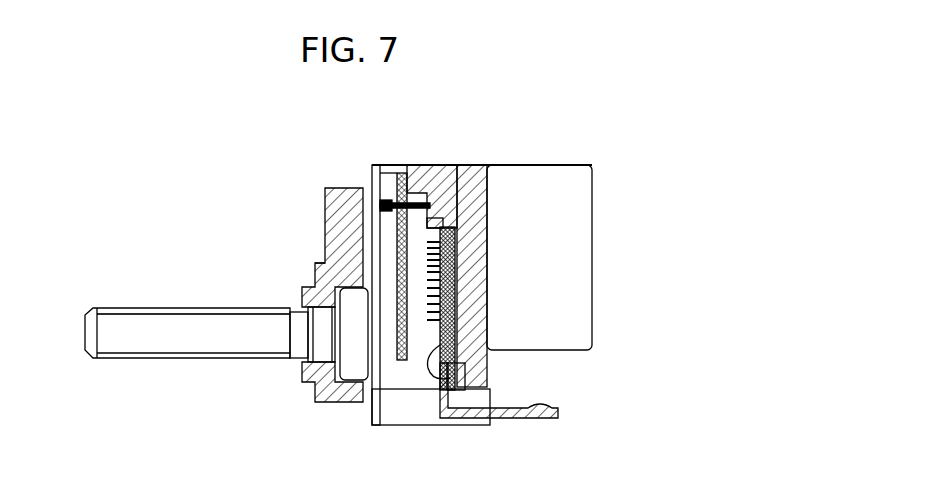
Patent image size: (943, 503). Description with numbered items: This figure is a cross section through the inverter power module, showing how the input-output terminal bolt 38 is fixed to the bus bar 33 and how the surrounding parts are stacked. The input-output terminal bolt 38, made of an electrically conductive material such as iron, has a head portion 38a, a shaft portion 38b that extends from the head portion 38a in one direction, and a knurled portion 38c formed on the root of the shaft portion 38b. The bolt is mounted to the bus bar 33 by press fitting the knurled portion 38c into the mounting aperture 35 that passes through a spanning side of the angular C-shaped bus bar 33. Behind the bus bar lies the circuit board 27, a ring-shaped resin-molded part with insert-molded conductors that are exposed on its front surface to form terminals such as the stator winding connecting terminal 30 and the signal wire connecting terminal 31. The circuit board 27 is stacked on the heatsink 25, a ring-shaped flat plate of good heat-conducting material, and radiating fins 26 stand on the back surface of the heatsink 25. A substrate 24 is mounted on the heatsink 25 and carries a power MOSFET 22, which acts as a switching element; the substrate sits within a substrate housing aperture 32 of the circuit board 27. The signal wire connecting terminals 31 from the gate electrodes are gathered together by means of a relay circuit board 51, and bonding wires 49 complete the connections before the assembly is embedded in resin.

The power MOSFET 22 is at (425, 327).
The substrate 24 is at (457, 320).
The heatsink 25 is at (485, 165).
The radiating fin 26 is at (575, 283).
The circuit board 27 is at (425, 163).
The stator winding connecting terminal 30 is at (512, 414).
The signal wire connecting terminal 31 is at (377, 183).
The substrate housing aperture 32 is at (450, 165).
The bus bar 33 is at (323, 227).
The mounting aperture 35 is at (307, 310).
The input-output terminal bolt 38 is at (140, 308).
The head portion 38a is at (340, 400).
The shaft portion 38b is at (178, 343).
The knurled portion 38c is at (300, 363).
The bonding wire 49 is at (430, 350).
The relay circuit board 51 is at (314, 262).